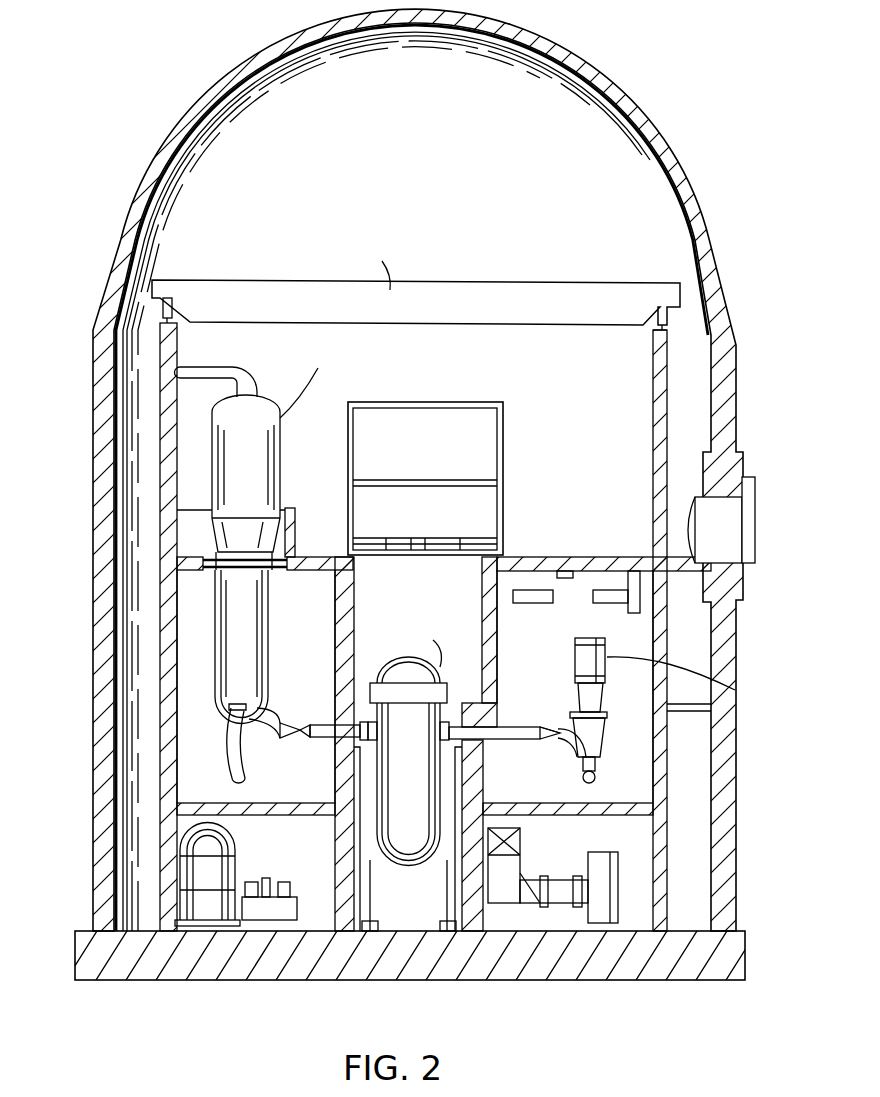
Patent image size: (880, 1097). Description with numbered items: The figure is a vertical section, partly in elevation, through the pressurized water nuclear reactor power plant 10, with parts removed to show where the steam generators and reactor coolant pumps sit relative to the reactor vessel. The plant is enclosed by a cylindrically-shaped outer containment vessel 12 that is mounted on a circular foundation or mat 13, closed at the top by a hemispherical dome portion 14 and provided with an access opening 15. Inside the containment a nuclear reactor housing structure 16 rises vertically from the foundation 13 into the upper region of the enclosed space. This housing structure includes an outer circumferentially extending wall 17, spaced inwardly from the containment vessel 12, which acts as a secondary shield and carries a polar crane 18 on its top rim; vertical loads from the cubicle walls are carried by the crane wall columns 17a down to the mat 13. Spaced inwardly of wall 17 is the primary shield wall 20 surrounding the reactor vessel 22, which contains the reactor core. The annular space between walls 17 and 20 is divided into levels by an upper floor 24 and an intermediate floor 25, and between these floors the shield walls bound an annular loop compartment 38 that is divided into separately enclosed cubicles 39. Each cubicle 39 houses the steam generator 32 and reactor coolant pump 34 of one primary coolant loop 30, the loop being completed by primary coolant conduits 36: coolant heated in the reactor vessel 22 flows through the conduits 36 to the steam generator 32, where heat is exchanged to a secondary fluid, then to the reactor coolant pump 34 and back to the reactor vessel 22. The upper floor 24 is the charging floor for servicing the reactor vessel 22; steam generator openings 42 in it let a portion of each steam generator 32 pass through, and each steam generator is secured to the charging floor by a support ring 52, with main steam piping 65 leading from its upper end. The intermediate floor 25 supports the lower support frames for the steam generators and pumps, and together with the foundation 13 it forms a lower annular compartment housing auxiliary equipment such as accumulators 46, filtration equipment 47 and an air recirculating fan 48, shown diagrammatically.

The nuclear reactor power plant 10 is at (410, 469).
The outer containment vessel 12 is at (733, 381).
The foundation or mat 13 is at (652, 982).
The hemispherical dome portion 14 is at (536, 36).
The access opening 15 is at (735, 497).
The nuclear reactor housing structure 16 is at (668, 444).
The outer circumferentially extending wall 17 is at (162, 370).
The crane wall columns 17a is at (656, 897).
The polar crane 18 is at (448, 283).
The primary shield wall 20 is at (513, 563).
The reactor vessel 22 is at (423, 788).
The upper floor (charging floor) 24 is at (580, 560).
The intermediate floor 25 is at (178, 805).
The primary coolant loop 30 is at (547, 742).
The steam generator 32 is at (252, 480).
The reactor coolant pump 34 is at (575, 663).
The primary coolant conduits 36 is at (323, 724).
The annular loop compartment 38 is at (203, 627).
The cubicle 39 is at (324, 618).
The steam generator opening 42 is at (290, 538).
The accumulator 46 is at (230, 868).
The filtration equipment 47 is at (280, 882).
The air recirculating fan 48 is at (513, 863).
The support ring 52 is at (222, 577).
The main steam piping 65 is at (187, 365).